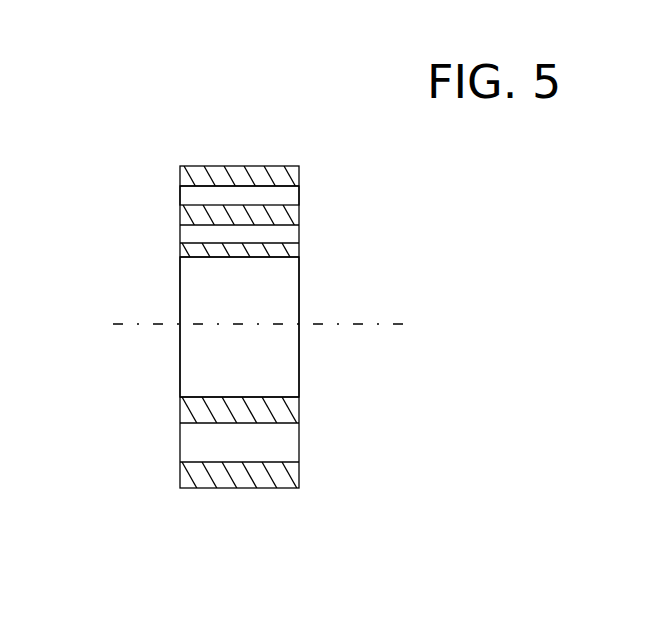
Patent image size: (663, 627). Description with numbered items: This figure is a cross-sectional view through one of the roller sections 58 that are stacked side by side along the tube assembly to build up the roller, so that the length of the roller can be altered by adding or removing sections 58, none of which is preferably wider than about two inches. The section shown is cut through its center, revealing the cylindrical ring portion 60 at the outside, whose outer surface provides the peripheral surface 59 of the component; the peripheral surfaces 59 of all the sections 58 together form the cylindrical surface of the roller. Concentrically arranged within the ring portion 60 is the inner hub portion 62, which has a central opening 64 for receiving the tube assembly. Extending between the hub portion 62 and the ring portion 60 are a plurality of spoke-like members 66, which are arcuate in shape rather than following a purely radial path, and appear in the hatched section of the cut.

The roller section 58 is at (262, 488).
The peripheral surface 59 is at (230, 183).
The cylindrical ring portion 60 is at (300, 195).
The inner hub portion 62 is at (180, 410).
The central opening 64 is at (272, 397).
The spoke-like member 66 is at (300, 216).